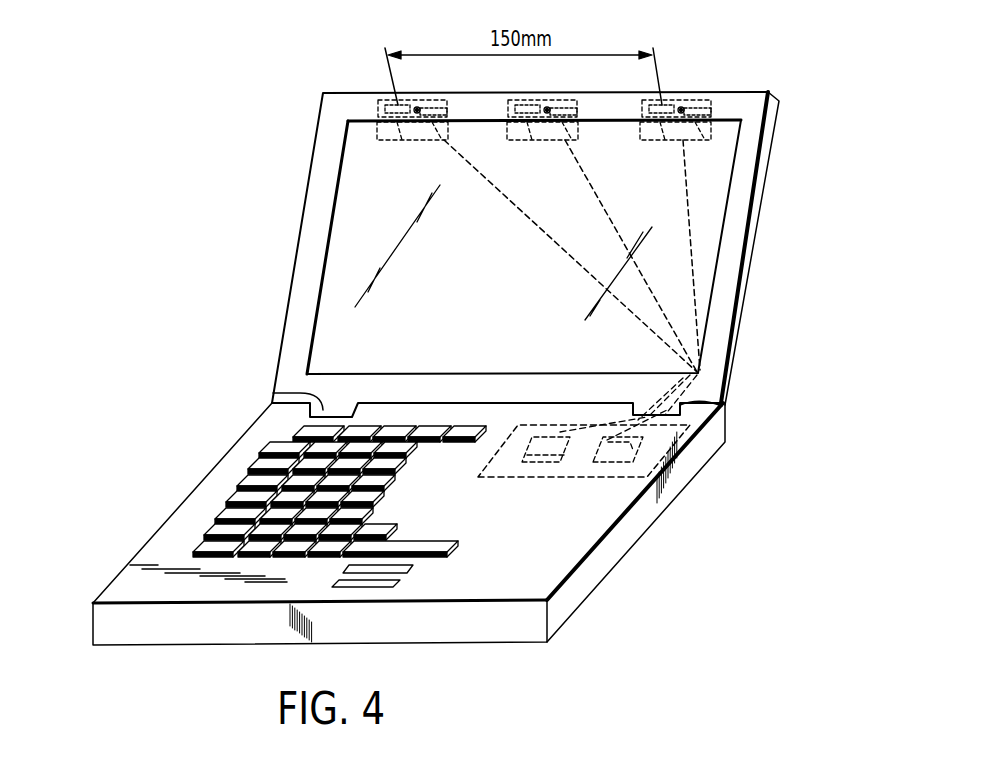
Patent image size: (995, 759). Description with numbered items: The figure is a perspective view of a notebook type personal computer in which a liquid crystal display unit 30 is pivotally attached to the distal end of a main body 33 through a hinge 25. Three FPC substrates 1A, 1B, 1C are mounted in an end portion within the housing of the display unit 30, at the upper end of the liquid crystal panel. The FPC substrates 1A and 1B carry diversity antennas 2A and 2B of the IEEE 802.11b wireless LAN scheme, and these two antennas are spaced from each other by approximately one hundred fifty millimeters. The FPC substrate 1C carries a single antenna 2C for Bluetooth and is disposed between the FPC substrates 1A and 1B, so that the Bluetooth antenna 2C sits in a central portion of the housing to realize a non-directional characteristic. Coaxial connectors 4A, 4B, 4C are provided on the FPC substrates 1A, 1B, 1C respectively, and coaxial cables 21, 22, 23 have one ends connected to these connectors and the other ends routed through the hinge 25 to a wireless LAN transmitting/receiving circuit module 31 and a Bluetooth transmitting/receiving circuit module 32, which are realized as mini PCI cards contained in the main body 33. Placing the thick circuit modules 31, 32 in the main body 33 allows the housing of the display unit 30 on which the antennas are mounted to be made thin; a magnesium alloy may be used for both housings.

The FPC substrate 1A is at (426, 109).
The FPC substrate 1B is at (689, 109).
The FPC substrate 1C is at (556, 109).
The diversity antenna 2A is at (402, 141).
The diversity antenna 2B is at (665, 141).
The Bluetooth antenna 2C is at (532, 141).
The coaxial connector 4A is at (417, 104).
The coaxial connector 4B is at (679, 104).
The coaxial connector 4C is at (547, 104).
The coaxial cable 21 is at (506, 198).
The coaxial cable 22 is at (688, 198).
The coaxial cable 23 is at (598, 200).
The hinge 25 is at (273, 393).
The liquid crystal display unit 30 is at (300, 255).
The wireless LAN transmitting/receiving circuit module 31 is at (523, 477).
The Bluetooth transmitting/receiving circuit module 32 is at (600, 477).
The main body 33 is at (580, 590).